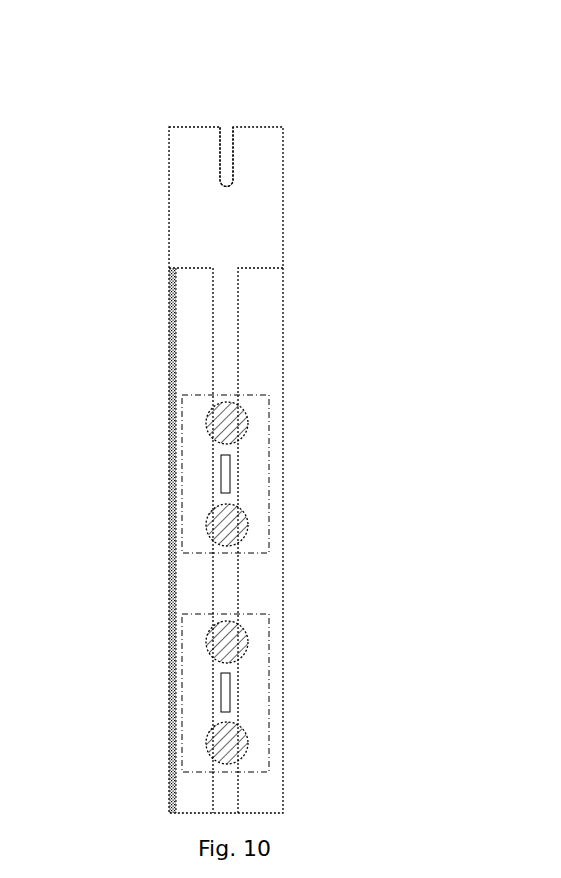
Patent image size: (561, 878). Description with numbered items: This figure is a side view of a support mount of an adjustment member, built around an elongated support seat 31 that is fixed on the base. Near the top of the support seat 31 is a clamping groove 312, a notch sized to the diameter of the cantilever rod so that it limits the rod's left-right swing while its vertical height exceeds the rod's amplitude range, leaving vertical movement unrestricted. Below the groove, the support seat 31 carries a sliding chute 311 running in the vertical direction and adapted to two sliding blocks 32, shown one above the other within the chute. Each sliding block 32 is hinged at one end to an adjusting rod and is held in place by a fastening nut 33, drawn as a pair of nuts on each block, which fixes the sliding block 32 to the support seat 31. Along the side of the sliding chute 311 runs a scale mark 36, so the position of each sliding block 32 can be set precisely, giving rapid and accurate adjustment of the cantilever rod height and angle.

The support seat 31 is at (283, 213).
The sliding chute 311 is at (227, 583).
The clamping groove 312 is at (227, 133).
The sliding block 32 is at (269, 478).
The fastening nut 33 is at (227, 423).
The scale mark 36 is at (168, 353).